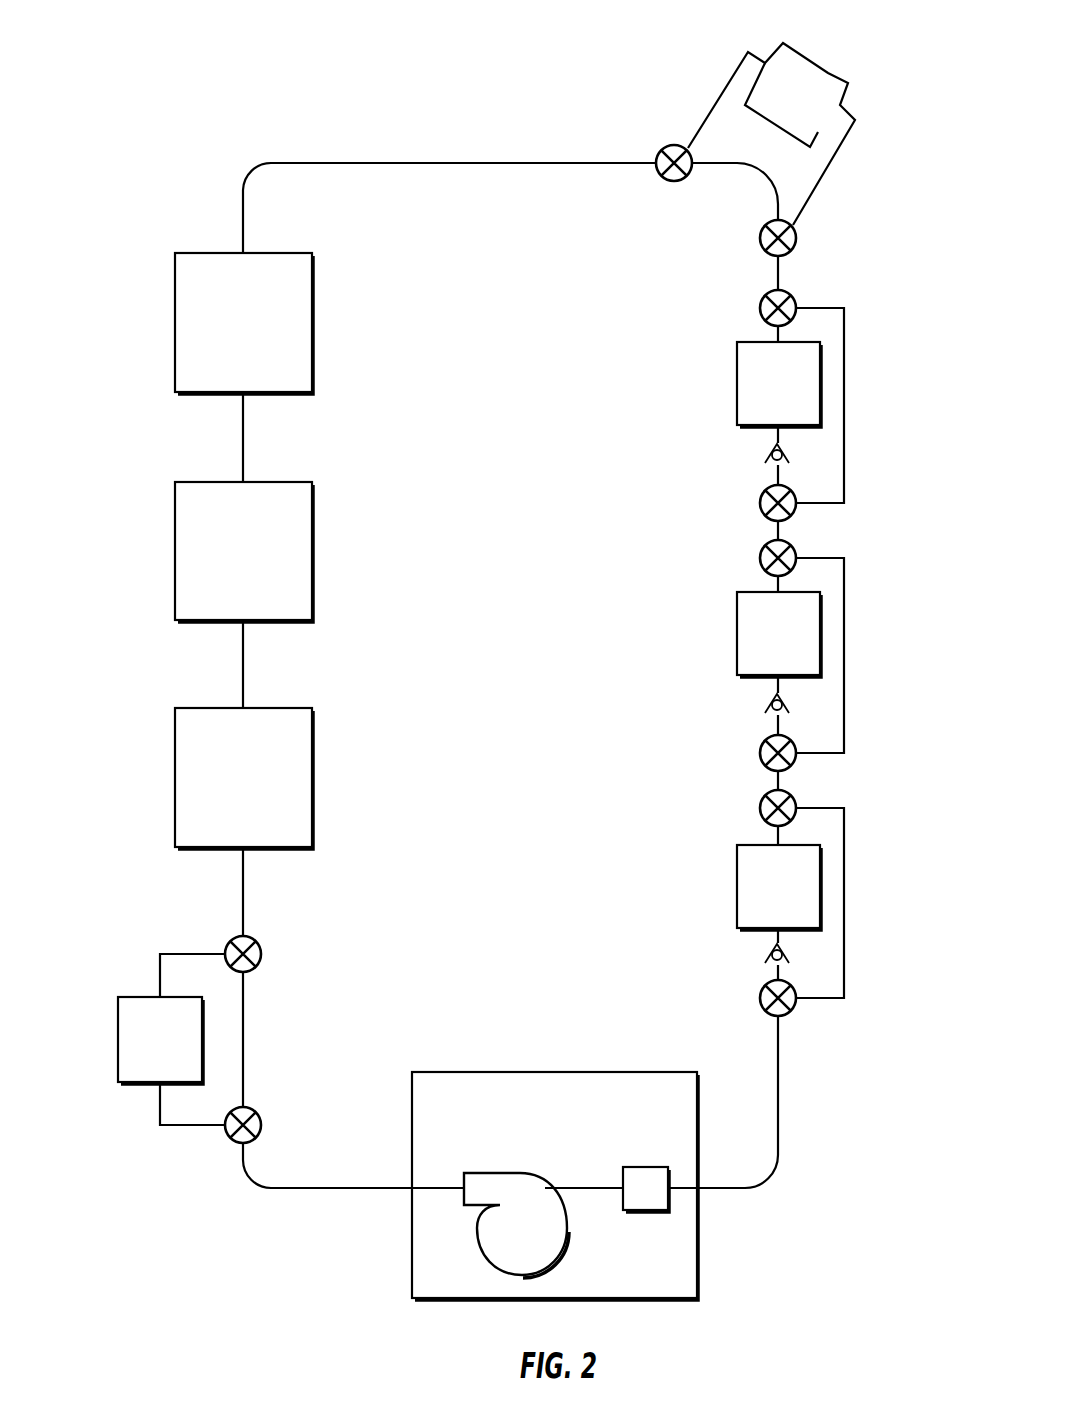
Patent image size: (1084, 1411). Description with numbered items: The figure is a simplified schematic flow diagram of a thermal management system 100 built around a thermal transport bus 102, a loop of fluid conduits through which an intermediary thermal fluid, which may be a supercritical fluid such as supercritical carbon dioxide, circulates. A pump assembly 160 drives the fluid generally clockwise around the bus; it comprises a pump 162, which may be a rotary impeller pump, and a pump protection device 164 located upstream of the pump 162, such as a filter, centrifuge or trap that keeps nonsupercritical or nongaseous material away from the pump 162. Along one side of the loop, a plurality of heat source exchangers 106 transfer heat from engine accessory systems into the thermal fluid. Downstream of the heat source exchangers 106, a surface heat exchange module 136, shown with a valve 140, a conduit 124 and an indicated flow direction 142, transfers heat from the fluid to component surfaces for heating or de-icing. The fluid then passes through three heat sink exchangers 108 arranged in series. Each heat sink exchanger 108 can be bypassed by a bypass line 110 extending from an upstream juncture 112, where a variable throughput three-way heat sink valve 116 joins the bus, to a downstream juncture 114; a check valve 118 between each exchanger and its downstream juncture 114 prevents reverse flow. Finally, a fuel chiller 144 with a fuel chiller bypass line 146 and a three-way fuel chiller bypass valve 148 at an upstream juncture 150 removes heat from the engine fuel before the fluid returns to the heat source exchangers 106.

The thermal management system 100 is at (117, 42).
The thermal transport bus 102 is at (510, 683).
The heat source exchanger 106 is at (221, 551).
The heat sink exchanger 108 is at (739, 636).
The bypass line 110 is at (862, 653).
The upstream juncture 112 is at (856, 527).
The downstream juncture 114 is at (776, 747).
The three-way heat sink valve 116 is at (739, 546).
The check valve 118 is at (728, 703).
The conduit 124 is at (705, 197).
The surface heat exchange module 136 is at (791, 143).
The valve 140 is at (662, 131).
The flow direction 142 is at (597, 202).
The fuel chiller 144 is at (140, 1036).
The fuel chiller bypass line 146 is at (240, 1030).
The three-way fuel chiller bypass valve 148 is at (282, 1115).
The upstream juncture 150 is at (173, 1183).
The pump assembly 160 is at (597, 1185).
The pump 162 is at (516, 1194).
The pump protection device 164 is at (646, 1156).